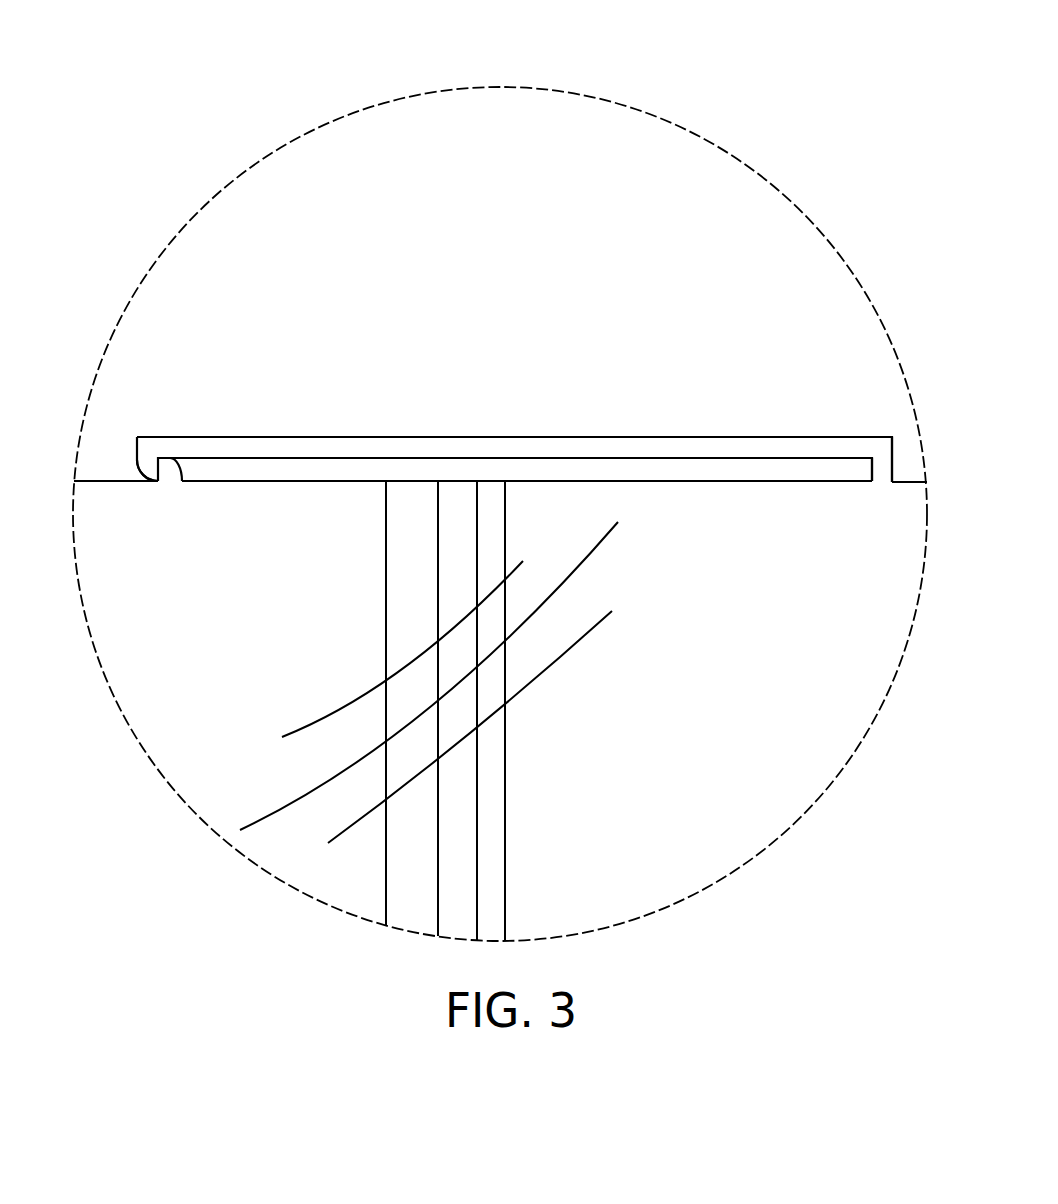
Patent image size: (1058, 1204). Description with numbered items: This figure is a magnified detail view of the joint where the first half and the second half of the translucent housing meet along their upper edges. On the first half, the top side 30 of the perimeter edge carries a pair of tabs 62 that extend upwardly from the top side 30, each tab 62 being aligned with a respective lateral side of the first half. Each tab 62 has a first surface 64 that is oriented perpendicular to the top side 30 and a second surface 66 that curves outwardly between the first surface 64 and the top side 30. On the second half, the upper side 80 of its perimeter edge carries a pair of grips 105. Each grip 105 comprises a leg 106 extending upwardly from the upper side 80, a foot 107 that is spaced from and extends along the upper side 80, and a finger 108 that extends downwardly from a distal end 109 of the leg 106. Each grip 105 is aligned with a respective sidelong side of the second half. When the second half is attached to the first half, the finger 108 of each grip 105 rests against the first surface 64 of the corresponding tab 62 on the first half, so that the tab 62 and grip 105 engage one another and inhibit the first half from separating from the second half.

The top side 30 is at (105, 481).
The tab 62 is at (173, 458).
The first surface 64 is at (156, 458).
The second surface 66 is at (182, 470).
The upper side 80 is at (787, 481).
The grip 105 is at (613, 405).
The leg 106 is at (892, 457).
The foot 107 is at (691, 437).
The finger 108 is at (138, 470).
The distal end 109 is at (137, 432).